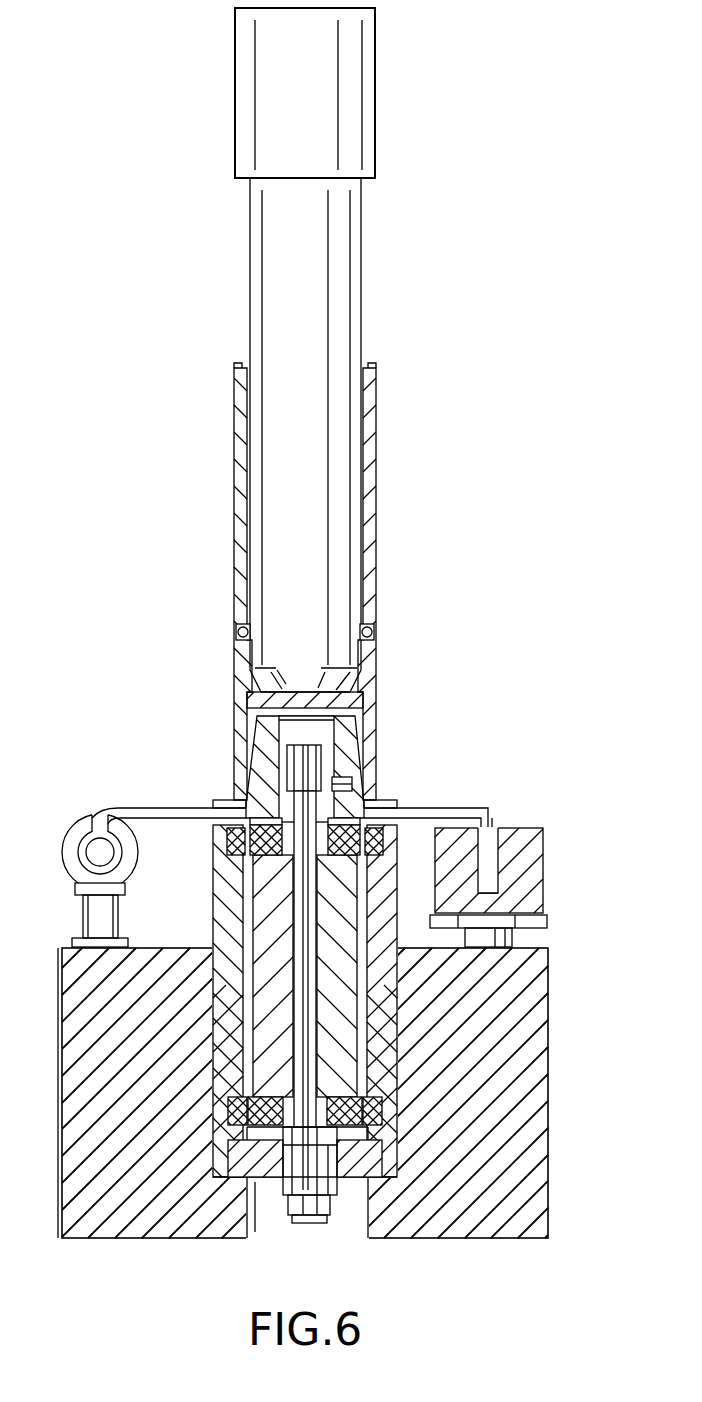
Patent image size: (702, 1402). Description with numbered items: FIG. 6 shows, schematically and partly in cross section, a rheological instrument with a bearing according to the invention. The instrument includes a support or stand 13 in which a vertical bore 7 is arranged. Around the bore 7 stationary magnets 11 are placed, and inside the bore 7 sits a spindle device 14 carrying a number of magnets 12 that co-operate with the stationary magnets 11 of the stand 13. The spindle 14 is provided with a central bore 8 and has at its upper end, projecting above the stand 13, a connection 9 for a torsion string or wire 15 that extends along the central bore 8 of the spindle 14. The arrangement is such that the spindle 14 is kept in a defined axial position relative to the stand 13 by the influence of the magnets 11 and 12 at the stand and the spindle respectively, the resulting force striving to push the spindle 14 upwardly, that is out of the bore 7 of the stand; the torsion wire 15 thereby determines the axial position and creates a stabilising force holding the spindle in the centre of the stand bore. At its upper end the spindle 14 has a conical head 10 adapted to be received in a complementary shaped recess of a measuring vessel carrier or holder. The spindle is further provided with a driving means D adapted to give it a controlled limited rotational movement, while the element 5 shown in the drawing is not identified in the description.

The holding block 5 is at (522, 832).
The vertical bore 7 is at (399, 1058).
The central bore 8 is at (300, 940).
The connection 9 is at (334, 721).
The conical head 10 is at (262, 762).
The stationary magnets 11 is at (228, 845).
The magnets 12 is at (252, 860).
The support or stand 13 is at (558, 1071).
The spindle device 14 is at (352, 1010).
The torsion string or wire 15 is at (300, 1022).
The driving means D is at (90, 822).